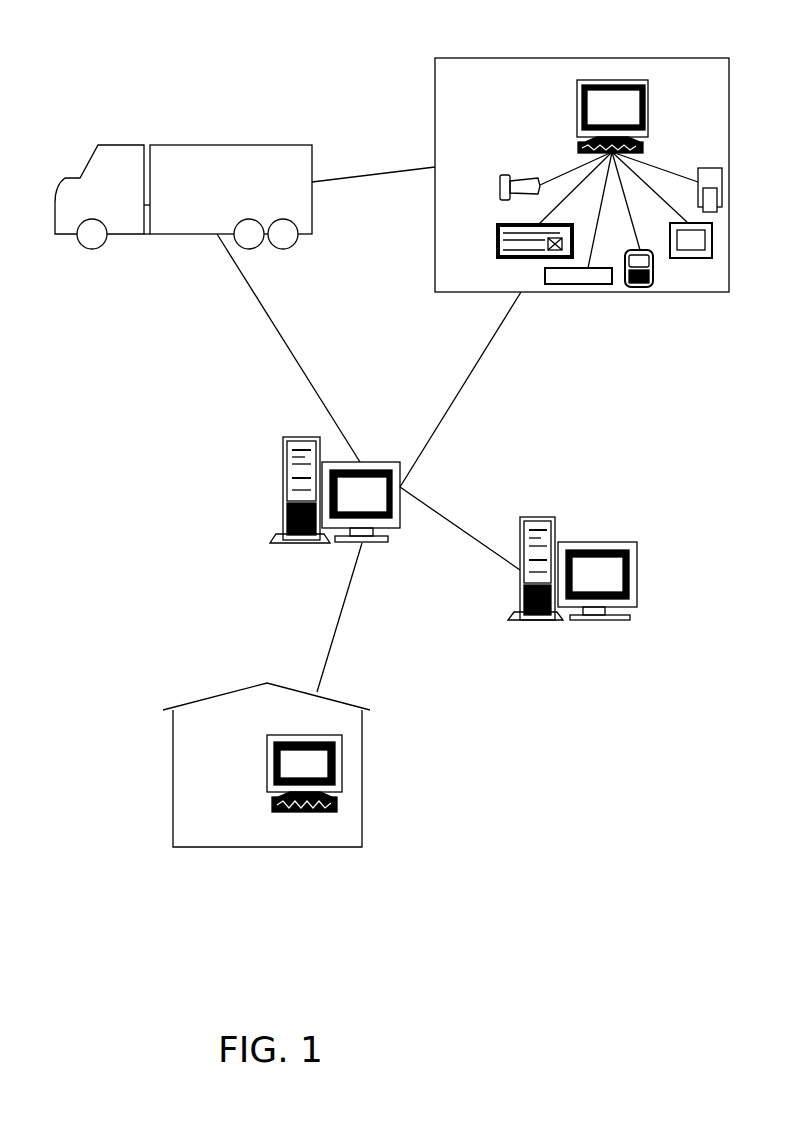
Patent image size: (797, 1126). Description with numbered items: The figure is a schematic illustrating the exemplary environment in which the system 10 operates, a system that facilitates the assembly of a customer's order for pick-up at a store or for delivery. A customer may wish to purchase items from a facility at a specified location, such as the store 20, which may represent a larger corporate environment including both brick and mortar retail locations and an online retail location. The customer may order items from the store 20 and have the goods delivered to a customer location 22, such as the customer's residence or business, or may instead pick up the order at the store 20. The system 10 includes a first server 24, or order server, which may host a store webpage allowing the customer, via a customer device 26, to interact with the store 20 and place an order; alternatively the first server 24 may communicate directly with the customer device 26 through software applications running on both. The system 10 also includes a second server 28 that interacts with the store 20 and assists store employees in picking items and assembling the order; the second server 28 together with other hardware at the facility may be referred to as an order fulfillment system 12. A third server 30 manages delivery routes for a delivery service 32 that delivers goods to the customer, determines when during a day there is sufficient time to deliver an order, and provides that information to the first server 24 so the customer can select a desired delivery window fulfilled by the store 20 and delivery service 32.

The system 10 is at (627, 396).
The order fulfillment system 12 is at (206, 434).
The store 20 is at (628, 53).
The customer location 22 is at (328, 691).
The first server 24 is at (366, 448).
The customer device 26 is at (351, 755).
The second server 28 is at (657, 97).
The third server 30 is at (604, 525).
The delivery service 32 is at (248, 140).